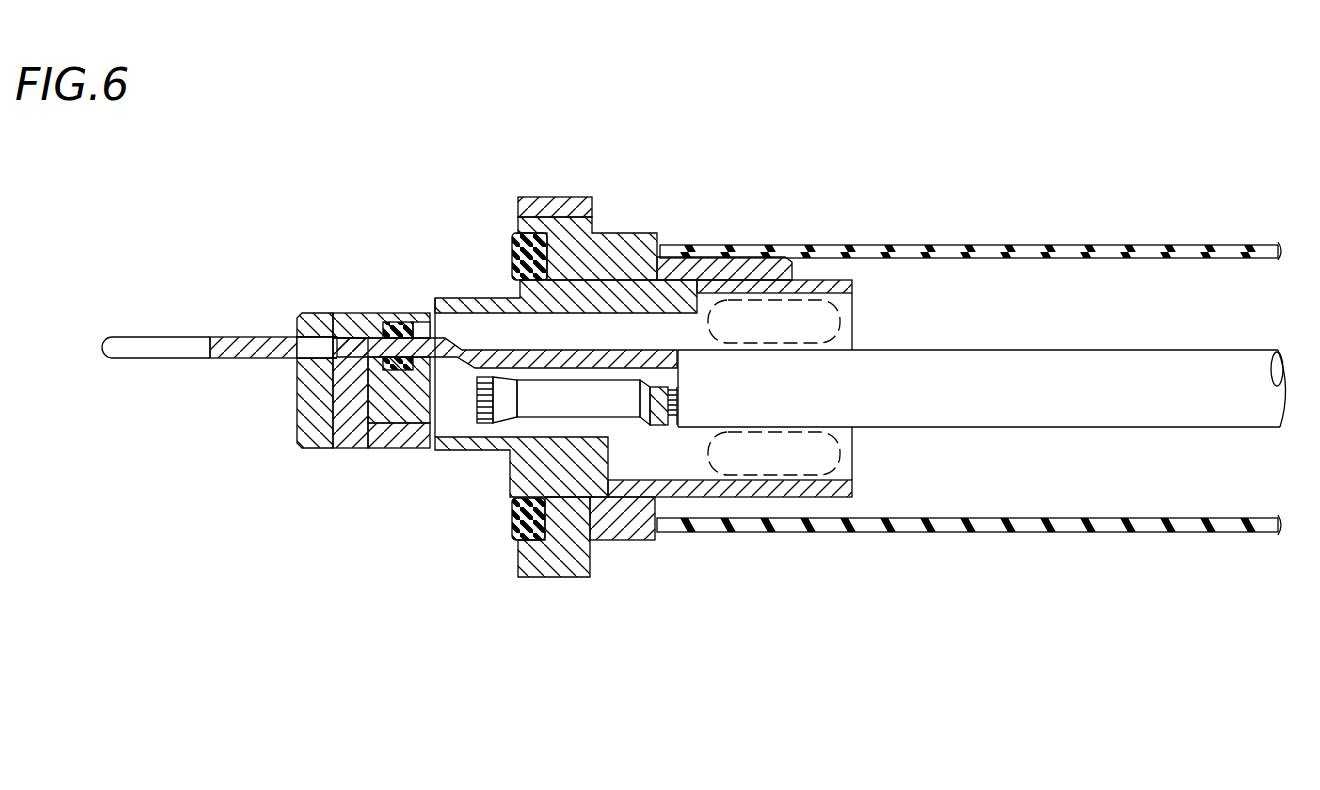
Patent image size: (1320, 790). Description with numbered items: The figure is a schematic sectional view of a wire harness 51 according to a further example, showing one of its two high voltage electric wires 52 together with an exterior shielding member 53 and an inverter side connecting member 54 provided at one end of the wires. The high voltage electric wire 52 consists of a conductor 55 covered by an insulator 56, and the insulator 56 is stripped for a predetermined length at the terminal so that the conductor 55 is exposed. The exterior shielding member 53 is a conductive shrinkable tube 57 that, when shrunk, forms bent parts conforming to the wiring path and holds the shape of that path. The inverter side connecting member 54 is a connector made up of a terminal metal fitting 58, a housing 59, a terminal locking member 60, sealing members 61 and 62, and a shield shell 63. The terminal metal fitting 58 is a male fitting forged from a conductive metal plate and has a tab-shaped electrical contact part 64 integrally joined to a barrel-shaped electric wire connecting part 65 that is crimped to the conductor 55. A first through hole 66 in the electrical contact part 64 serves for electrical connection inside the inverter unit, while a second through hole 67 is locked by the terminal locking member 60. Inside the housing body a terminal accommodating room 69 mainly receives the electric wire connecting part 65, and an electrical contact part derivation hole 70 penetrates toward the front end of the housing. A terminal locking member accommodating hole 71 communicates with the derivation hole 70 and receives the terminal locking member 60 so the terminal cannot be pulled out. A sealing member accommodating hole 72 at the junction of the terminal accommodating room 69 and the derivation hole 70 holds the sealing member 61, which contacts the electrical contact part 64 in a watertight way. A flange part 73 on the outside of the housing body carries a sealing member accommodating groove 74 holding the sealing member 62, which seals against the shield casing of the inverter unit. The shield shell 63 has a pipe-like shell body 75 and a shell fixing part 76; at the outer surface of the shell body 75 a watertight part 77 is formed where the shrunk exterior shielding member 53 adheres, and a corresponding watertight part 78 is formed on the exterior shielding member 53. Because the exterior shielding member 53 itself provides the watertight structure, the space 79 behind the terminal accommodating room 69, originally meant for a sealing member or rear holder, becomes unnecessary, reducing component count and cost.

The wire harness 51 is at (925, 138).
The high voltage electric wire 52 is at (1200, 378).
The exterior shielding member 53 is at (1107, 240).
The inverter side connecting member 54 is at (503, 173).
The conductor 55 is at (473, 397).
The insulator 56 is at (1218, 415).
The conductive shrinkable tube 57 is at (1200, 245).
The terminal metal fitting 58 is at (513, 346).
The housing 59 is at (305, 425).
The terminal locking member 60 is at (345, 455).
The sealing member 61 is at (410, 322).
The sealing member 62 is at (515, 530).
The shield shell 63 is at (596, 215).
The electrical contact part 64 is at (233, 336).
The electric wire connecting part 65 is at (620, 398).
The first through hole 66 is at (147, 337).
The second through hole 67 is at (347, 335).
The terminal accommodating room 69 is at (615, 340).
The electrical contact part derivation hole 70 is at (283, 337).
The terminal locking member accommodating hole 71 is at (335, 405).
The sealing member accommodating hole 72 is at (397, 322).
The flange part 73 is at (545, 555).
The sealing member accommodating groove 74 is at (512, 515).
The shell body 75 is at (647, 533).
The shell fixing part 76 is at (560, 196).
The watertight part 77 is at (790, 243).
The watertight part 78 is at (740, 243).
The space 79 is at (830, 320).